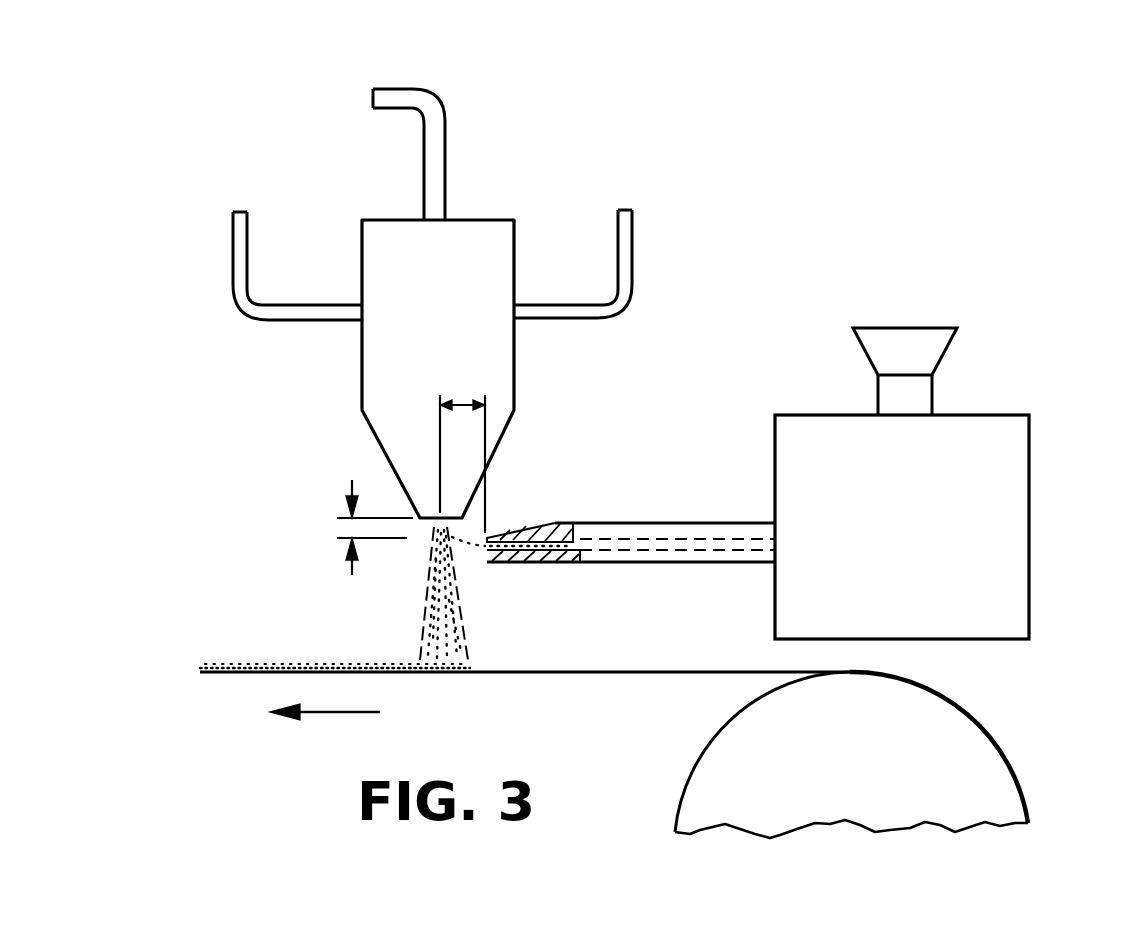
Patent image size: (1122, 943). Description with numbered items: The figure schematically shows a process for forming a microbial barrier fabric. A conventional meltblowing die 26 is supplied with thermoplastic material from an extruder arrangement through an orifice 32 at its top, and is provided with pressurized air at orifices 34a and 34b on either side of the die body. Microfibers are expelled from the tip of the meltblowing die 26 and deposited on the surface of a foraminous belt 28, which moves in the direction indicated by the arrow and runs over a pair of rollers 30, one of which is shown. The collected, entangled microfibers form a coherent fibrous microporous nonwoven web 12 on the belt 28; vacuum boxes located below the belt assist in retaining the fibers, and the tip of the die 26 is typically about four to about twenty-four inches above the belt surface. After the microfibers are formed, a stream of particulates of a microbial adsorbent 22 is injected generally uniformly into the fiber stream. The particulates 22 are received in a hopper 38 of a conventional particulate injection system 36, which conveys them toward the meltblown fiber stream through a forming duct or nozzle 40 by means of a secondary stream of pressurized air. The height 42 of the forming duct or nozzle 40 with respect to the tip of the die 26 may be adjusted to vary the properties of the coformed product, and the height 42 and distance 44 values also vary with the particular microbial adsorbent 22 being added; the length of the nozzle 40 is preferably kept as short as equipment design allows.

The meltblown nonwoven web 12 is at (252, 667).
The microbial adsorbent 22 is at (935, 312).
The meltblowing die 26 is at (463, 230).
The foraminous belt 28 is at (580, 675).
The roller 30 is at (973, 745).
The orifice 32 is at (374, 95).
The orifice 34a is at (240, 210).
The orifice 34b is at (625, 208).
The particulate injection system 36 is at (1013, 483).
The hopper 38 is at (863, 352).
The forming duct or nozzle 40 is at (705, 563).
The height 42 is at (350, 530).
The distance 44 is at (458, 402).